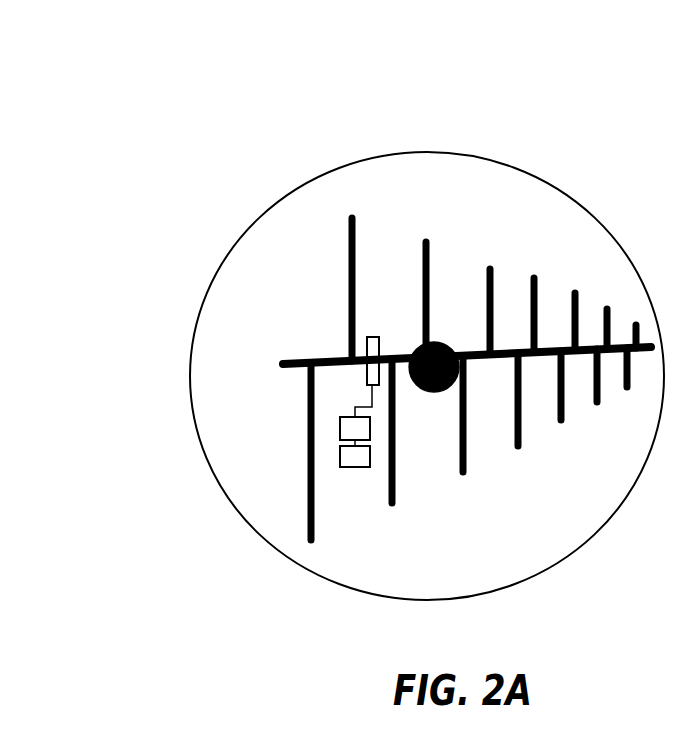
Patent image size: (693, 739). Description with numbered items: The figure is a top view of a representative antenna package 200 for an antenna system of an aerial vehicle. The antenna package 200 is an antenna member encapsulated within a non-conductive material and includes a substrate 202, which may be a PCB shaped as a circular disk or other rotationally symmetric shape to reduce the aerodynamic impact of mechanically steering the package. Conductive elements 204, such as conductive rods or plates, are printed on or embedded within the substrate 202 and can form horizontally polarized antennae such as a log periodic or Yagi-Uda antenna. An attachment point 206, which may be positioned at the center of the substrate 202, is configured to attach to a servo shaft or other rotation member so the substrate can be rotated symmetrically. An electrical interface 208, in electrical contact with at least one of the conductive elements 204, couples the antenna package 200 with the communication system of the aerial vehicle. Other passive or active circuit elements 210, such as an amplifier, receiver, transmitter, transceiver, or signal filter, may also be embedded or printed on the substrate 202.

The antenna package 200 is at (95, 76).
The substrate 202 is at (257, 213).
The conductive elements 204 is at (282, 362).
The attachment point 206 is at (449, 343).
The electrical interface 208 is at (373, 337).
The passive or active circuit elements 210 is at (340, 430).